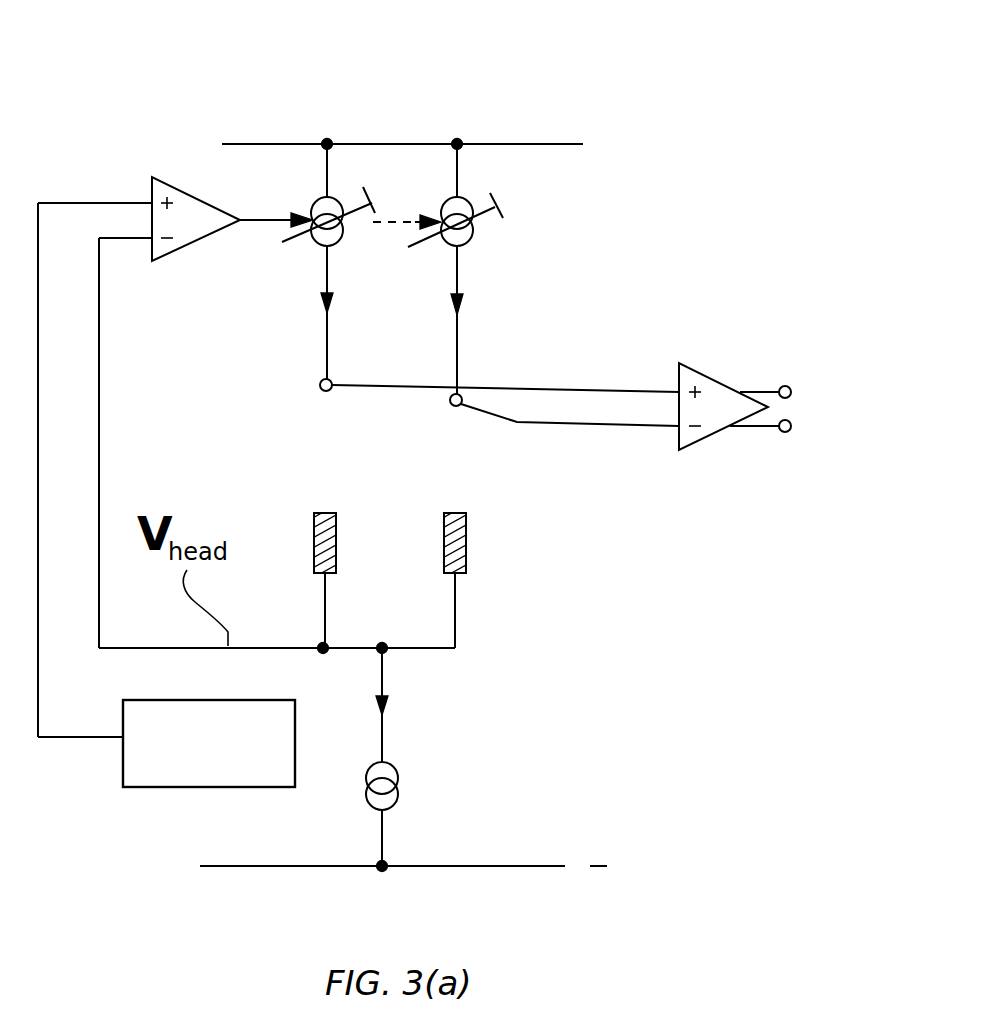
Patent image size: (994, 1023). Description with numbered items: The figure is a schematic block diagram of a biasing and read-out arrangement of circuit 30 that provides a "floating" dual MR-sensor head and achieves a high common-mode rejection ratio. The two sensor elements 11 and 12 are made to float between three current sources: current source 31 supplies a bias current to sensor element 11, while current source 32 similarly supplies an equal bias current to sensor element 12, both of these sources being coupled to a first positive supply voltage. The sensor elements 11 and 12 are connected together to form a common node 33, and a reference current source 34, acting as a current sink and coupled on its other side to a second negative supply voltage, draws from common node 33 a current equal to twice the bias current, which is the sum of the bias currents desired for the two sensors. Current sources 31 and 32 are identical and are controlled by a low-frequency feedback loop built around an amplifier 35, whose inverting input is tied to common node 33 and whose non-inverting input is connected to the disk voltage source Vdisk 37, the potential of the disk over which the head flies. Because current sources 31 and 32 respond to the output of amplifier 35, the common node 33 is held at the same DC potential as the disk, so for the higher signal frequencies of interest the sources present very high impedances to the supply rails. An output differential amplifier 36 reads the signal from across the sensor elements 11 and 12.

The circuit 30 is at (358, 77).
The sensor element 11 is at (325, 564).
The sensor element 12 is at (453, 565).
The current source 31 is at (356, 264).
The current source 32 is at (476, 272).
The common node 33 is at (277, 625).
The reference current source 34 is at (398, 757).
The amplifier 35 is at (208, 217).
The output differential amplifier 36 is at (725, 413).
The disk voltage source Vdisk 37 is at (166, 743).